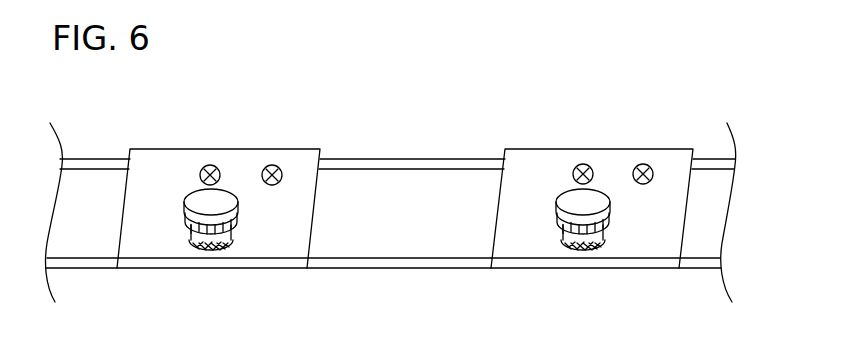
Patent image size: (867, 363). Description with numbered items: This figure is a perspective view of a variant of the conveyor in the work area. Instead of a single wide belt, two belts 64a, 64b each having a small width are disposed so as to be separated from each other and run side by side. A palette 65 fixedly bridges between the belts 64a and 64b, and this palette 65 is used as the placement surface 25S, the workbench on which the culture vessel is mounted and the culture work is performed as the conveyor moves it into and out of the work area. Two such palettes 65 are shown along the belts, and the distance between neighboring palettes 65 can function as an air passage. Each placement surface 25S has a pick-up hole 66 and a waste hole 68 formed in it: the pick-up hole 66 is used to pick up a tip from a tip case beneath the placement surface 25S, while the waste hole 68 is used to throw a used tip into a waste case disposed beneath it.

The placement surface 25S is at (177, 250).
The palette 65 is at (293, 253).
The belt 64a is at (440, 262).
The belt 64b is at (437, 163).
The pick-up hole 66 is at (217, 168).
The waste hole 68 is at (278, 165).